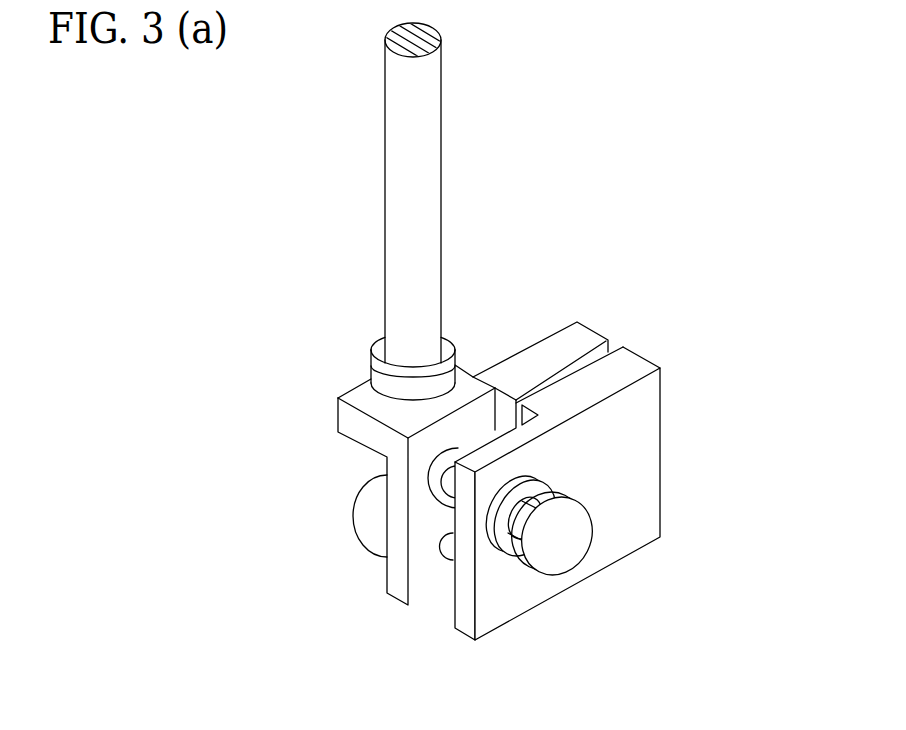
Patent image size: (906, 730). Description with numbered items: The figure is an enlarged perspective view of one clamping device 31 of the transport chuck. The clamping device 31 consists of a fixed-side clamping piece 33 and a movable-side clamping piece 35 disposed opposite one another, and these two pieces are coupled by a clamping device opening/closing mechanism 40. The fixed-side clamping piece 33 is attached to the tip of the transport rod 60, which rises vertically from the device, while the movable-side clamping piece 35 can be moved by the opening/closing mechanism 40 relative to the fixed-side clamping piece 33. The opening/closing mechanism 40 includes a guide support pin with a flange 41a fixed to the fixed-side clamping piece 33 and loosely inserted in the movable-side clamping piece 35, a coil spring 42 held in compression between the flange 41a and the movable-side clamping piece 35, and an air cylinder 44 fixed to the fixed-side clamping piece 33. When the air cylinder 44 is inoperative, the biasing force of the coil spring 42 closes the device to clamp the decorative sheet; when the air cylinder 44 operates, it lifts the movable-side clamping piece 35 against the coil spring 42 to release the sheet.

The clamping device 31 is at (695, 342).
The fixed-side clamping piece 33 is at (550, 347).
The movable-side clamping piece 35 is at (645, 460).
The clamping device opening/closing mechanism 40 is at (597, 543).
The flange 41a is at (560, 553).
The coil spring 42 is at (540, 485).
The air cylinder 44 is at (363, 520).
The transport rod 60 is at (422, 112).